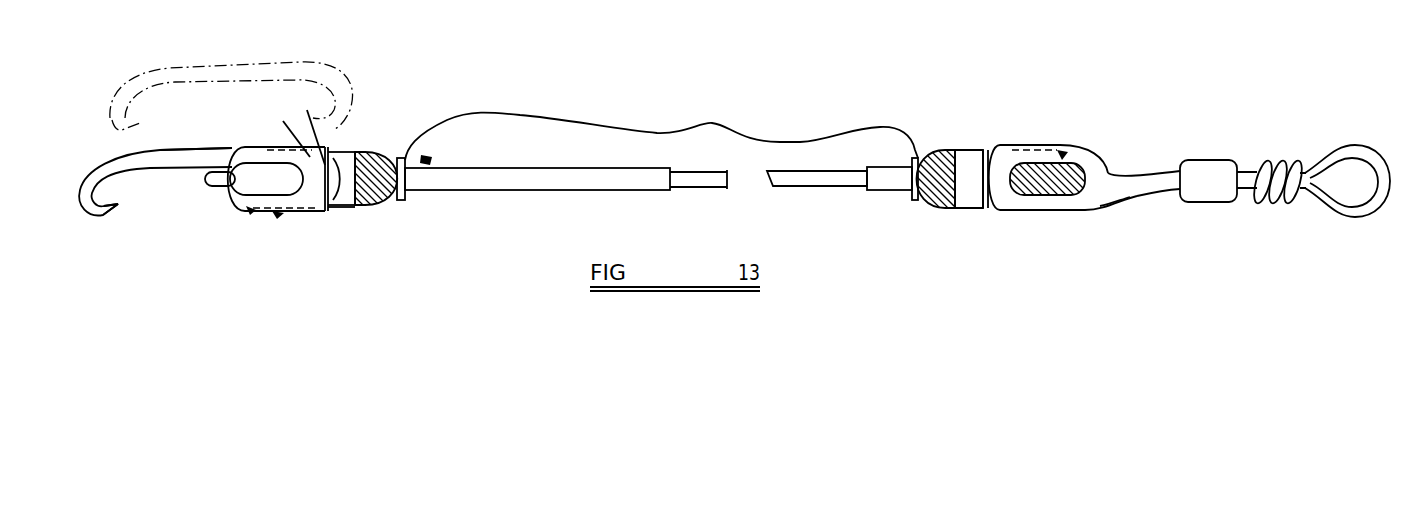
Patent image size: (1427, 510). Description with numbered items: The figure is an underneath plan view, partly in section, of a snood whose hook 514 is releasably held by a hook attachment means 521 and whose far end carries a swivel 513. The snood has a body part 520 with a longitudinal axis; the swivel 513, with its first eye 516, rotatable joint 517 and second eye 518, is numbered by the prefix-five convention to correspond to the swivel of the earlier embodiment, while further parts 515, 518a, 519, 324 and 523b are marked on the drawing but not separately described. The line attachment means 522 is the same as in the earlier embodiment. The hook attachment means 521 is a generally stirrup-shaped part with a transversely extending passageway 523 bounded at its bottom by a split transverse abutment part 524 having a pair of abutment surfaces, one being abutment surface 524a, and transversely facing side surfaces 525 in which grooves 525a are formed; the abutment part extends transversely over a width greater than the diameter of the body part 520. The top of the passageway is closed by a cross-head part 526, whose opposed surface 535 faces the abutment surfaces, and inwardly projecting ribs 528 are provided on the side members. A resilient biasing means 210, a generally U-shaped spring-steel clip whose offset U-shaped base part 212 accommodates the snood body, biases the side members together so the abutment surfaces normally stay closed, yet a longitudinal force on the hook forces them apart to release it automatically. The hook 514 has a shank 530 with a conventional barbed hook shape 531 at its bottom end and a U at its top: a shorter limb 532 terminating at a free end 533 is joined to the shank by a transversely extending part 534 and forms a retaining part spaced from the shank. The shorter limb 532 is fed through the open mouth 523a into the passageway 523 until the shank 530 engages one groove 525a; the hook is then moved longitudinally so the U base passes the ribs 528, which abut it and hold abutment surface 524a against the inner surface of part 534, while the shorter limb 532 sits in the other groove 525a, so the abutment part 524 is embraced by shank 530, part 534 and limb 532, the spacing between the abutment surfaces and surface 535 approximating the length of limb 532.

The resilient biasing means 210 is at (430, 170).
The base part 212 is at (430, 158).
The end wall 324 is at (1003, 157).
The swivel 513 is at (1279, 172).
The hook 514 is at (117, 158).
The shaft 515 is at (648, 190).
The first eye 516 is at (1342, 214).
The rotatable joint 517 is at (1212, 160).
The second eye 518 is at (998, 147).
The connector body top portion 518a is at (1040, 147).
The sleeve 519 is at (1060, 212).
The body part 520 is at (712, 123).
The hook attachment means 521 is at (1105, 207).
The line attachment means 522 is at (934, 144).
The passageway 523 is at (375, 145).
The open mouth 523a is at (350, 145).
The housing bottom wall 523b is at (345, 207).
The split transverse abutment part 524 is at (222, 192).
The abutment surface 524a is at (994, 290).
The side surfaces 525 is at (232, 152).
The grooves 525a is at (253, 160).
The cross-head part 526 is at (922, 202).
The inwardly projecting ribs 528 is at (330, 208).
The shank 530 is at (207, 158).
The barbed hook shape 531 is at (103, 216).
The shorter limb 532 is at (287, 213).
The free end 533 is at (278, 213).
The transversely extending part 534 is at (347, 157).
The opposed surface 535 is at (343, 207).